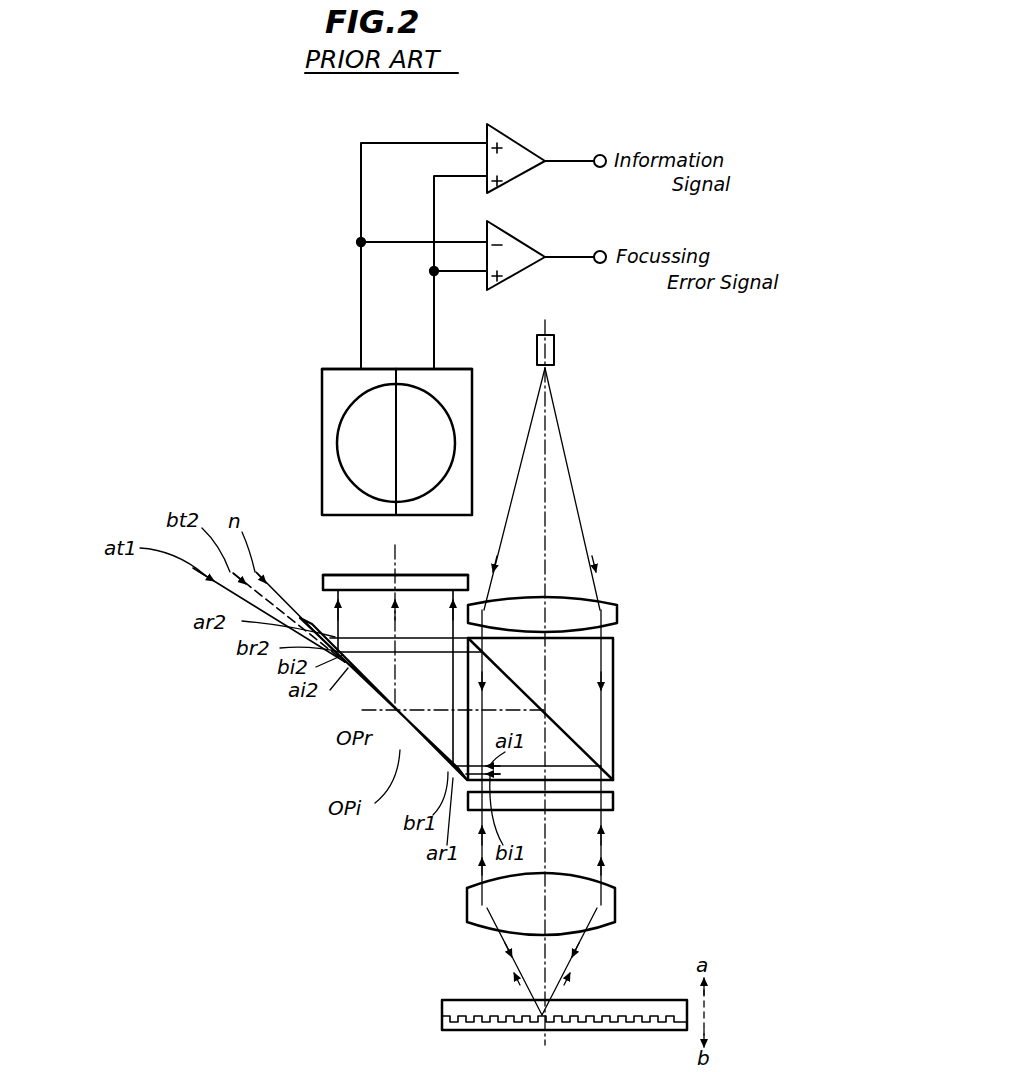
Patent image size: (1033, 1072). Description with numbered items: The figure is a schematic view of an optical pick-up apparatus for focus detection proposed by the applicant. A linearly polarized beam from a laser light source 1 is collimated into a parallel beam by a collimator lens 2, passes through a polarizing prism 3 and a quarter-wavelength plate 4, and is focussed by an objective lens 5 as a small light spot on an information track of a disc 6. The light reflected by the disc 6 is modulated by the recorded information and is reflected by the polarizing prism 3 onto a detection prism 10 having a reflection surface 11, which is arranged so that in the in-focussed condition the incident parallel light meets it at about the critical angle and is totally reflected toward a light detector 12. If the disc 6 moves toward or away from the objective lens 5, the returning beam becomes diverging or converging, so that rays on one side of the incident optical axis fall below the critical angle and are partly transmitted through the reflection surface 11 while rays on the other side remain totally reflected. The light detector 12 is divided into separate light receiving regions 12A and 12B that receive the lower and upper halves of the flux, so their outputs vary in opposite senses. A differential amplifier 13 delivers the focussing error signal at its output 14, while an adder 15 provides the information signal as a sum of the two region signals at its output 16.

The laser light source 1 is at (556, 352).
The collimator lens 2 is at (615, 615).
The polarizing prism 3 is at (575, 672).
The quarter-wavelength plate 4 is at (615, 800).
The objective lens 5 is at (597, 898).
The disc 6 is at (645, 1000).
The detection prism 10 is at (410, 690).
The reflection surface 11 is at (342, 700).
The light detector 12 is at (322, 575).
The light receiving region 12A is at (422, 408).
The light receiving region 12B is at (352, 440).
The differential amplifier 13 is at (519, 242).
The output of differential amplifier 14 is at (600, 250).
The adder 15 is at (517, 140).
The output of adder 16 is at (600, 154).